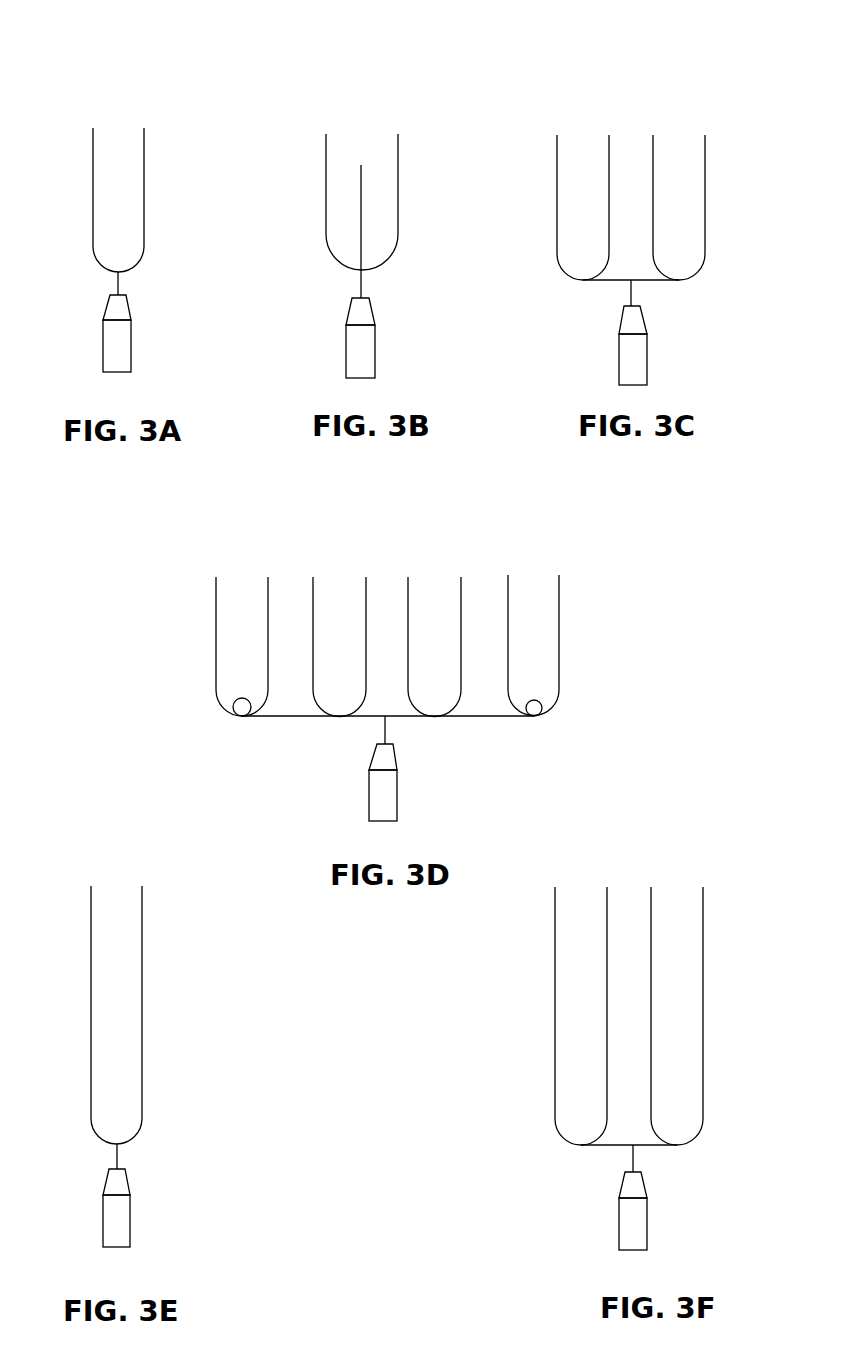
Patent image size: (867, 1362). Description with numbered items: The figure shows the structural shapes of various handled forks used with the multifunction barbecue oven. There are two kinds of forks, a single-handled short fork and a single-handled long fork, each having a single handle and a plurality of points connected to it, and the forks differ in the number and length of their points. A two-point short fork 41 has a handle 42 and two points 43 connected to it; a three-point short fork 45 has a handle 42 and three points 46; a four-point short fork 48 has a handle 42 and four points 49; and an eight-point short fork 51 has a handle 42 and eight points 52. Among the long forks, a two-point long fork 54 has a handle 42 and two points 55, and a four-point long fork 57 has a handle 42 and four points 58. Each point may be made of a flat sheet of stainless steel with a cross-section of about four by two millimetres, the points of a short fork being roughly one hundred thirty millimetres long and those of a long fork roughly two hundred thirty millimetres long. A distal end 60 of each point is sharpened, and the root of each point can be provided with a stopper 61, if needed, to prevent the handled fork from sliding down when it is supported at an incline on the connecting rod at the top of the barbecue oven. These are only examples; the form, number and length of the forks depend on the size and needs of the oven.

In FIG. 3A, the two-point short fork 41 is at (160, 107).
In FIG. 3A, the handle 42 is at (122, 348).
In FIG. 3B, the handle 42 is at (362, 354).
In FIG. 3C, the handle 42 is at (634, 362).
In FIG. 3D, the handle 42 is at (388, 800).
In FIG. 3E, the handle 42 is at (120, 1226).
In FIG. 3F, the handle 42 is at (636, 1228).
In FIG. 3A, the points 43 is at (145, 213).
In FIG. 3B, the three-point short fork 45 is at (408, 109).
In FIG. 3B, the points 46 is at (399, 212).
In FIG. 3C, the four-point short fork 48 is at (684, 106).
In FIG. 3C, the points 49 is at (706, 215).
In FIG. 3D, the eight-point short fork 51 is at (500, 554).
In FIG. 3D, the points 52 is at (561, 646).
In FIG. 3E, the two-point long fork 54 is at (168, 886).
In FIG. 3E, the points 55 is at (144, 1022).
In FIG. 3F, the four-point long fork 57 is at (730, 886).
In FIG. 3F, the points 58 is at (704, 1018).
In FIG. 3D, the distal end 60 is at (562, 582).
In FIG. 3D, the stopper 61 is at (538, 713).